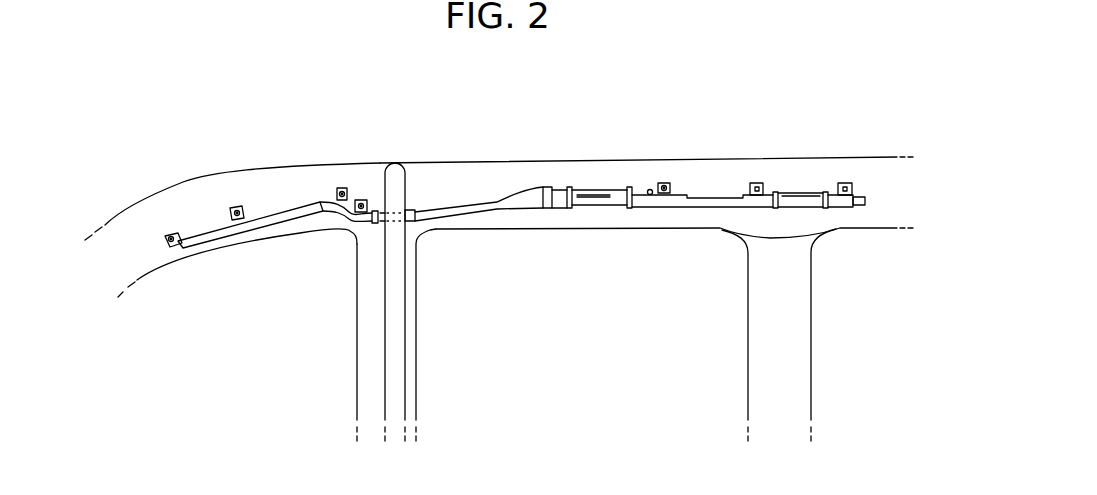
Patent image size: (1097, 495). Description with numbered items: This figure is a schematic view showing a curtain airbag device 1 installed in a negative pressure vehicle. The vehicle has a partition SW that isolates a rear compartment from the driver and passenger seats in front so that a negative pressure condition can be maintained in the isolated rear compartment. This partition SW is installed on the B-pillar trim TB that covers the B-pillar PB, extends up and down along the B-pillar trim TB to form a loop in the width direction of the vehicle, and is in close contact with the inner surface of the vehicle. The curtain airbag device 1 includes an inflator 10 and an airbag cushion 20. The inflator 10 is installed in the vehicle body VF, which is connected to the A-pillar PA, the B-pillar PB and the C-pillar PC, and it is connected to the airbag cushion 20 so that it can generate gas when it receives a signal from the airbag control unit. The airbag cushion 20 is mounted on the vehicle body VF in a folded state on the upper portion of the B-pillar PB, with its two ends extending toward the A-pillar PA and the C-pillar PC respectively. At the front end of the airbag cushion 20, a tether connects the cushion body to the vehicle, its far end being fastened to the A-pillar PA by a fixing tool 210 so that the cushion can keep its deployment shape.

The curtain airbag device 1 is at (511, 219).
The inflator 10 is at (610, 190).
The airbag cushion 20 is at (470, 207).
The fixing tool 210 is at (170, 237).
The A-pillar PA is at (120, 231).
The B-pillar PB is at (383, 238).
The C-pillar PC is at (768, 228).
The vehicle body VF is at (528, 169).
The B-pillar trim TB is at (366, 347).
The partition SW is at (397, 393).